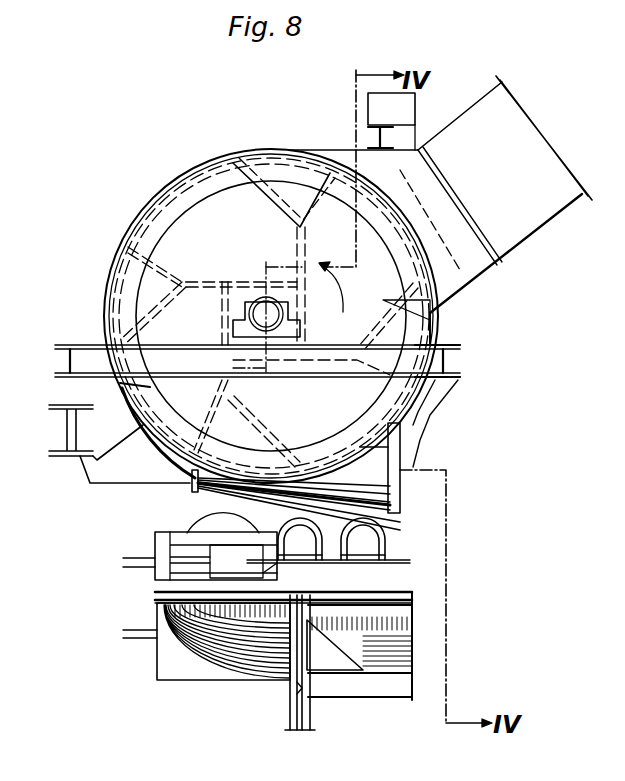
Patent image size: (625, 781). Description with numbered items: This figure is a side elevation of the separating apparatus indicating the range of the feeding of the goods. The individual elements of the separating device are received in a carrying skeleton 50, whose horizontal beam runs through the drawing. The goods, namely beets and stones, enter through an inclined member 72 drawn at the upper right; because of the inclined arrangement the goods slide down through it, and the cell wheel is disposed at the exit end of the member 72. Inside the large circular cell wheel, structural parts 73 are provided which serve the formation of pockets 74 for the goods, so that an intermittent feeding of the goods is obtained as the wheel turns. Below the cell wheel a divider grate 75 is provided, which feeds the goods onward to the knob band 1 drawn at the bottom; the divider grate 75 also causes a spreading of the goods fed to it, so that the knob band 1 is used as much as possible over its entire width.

The knob band 1 is at (381, 657).
The carrying skeleton 50 is at (65, 368).
The member 72 is at (530, 210).
The structural parts 73 is at (262, 188).
The pockets 74 is at (383, 279).
The divider grate 75 is at (207, 500).